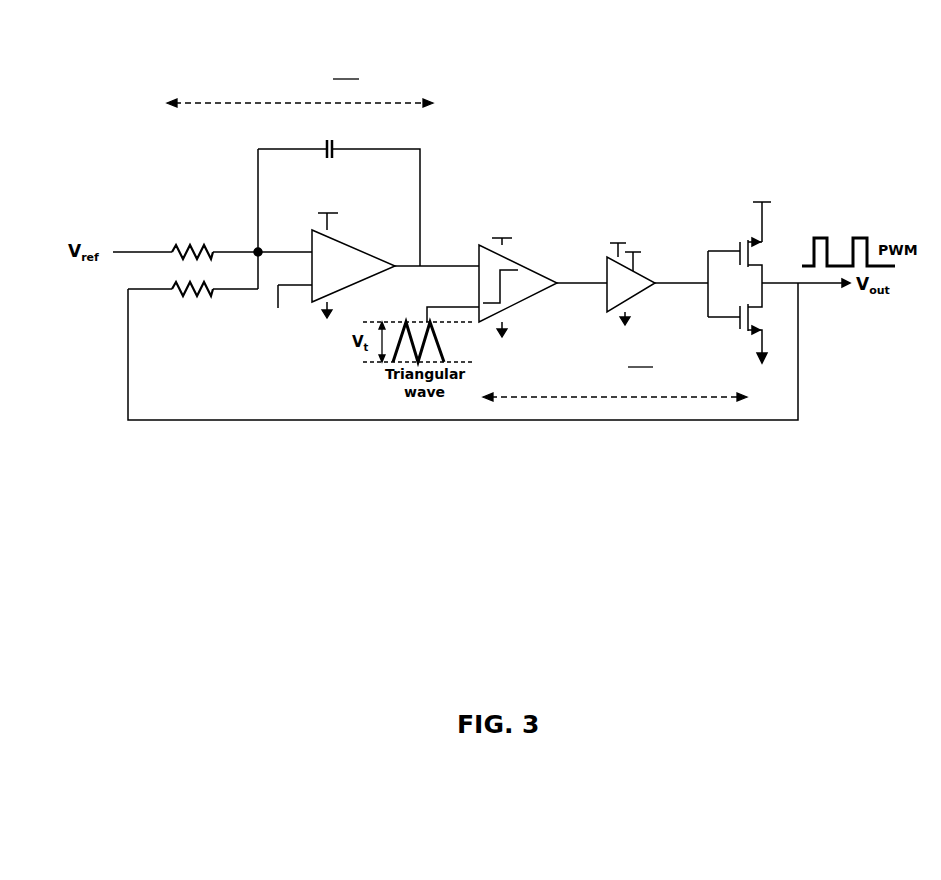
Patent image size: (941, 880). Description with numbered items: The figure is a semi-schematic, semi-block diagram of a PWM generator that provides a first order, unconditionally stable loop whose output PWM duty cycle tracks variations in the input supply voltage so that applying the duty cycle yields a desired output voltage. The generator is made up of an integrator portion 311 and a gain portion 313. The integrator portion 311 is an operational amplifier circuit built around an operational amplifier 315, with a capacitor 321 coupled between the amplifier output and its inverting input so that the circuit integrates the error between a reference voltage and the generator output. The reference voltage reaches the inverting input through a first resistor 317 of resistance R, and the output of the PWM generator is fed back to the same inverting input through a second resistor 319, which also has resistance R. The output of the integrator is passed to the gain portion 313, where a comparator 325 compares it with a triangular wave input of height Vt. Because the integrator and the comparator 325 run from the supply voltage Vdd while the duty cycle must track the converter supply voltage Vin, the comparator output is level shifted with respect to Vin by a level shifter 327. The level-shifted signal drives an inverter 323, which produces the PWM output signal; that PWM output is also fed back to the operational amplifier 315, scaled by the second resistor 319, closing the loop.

The integrator portion 311 is at (446, 137).
The gain portion 313 is at (632, 158).
The operational amplifier 315 is at (351, 243).
The first resistor 317 is at (177, 243).
The second resistor 319 is at (190, 298).
The capacitor 321 is at (335, 141).
The inverter 323 is at (763, 280).
The comparator 325 is at (515, 257).
The level shifter 327 is at (652, 271).